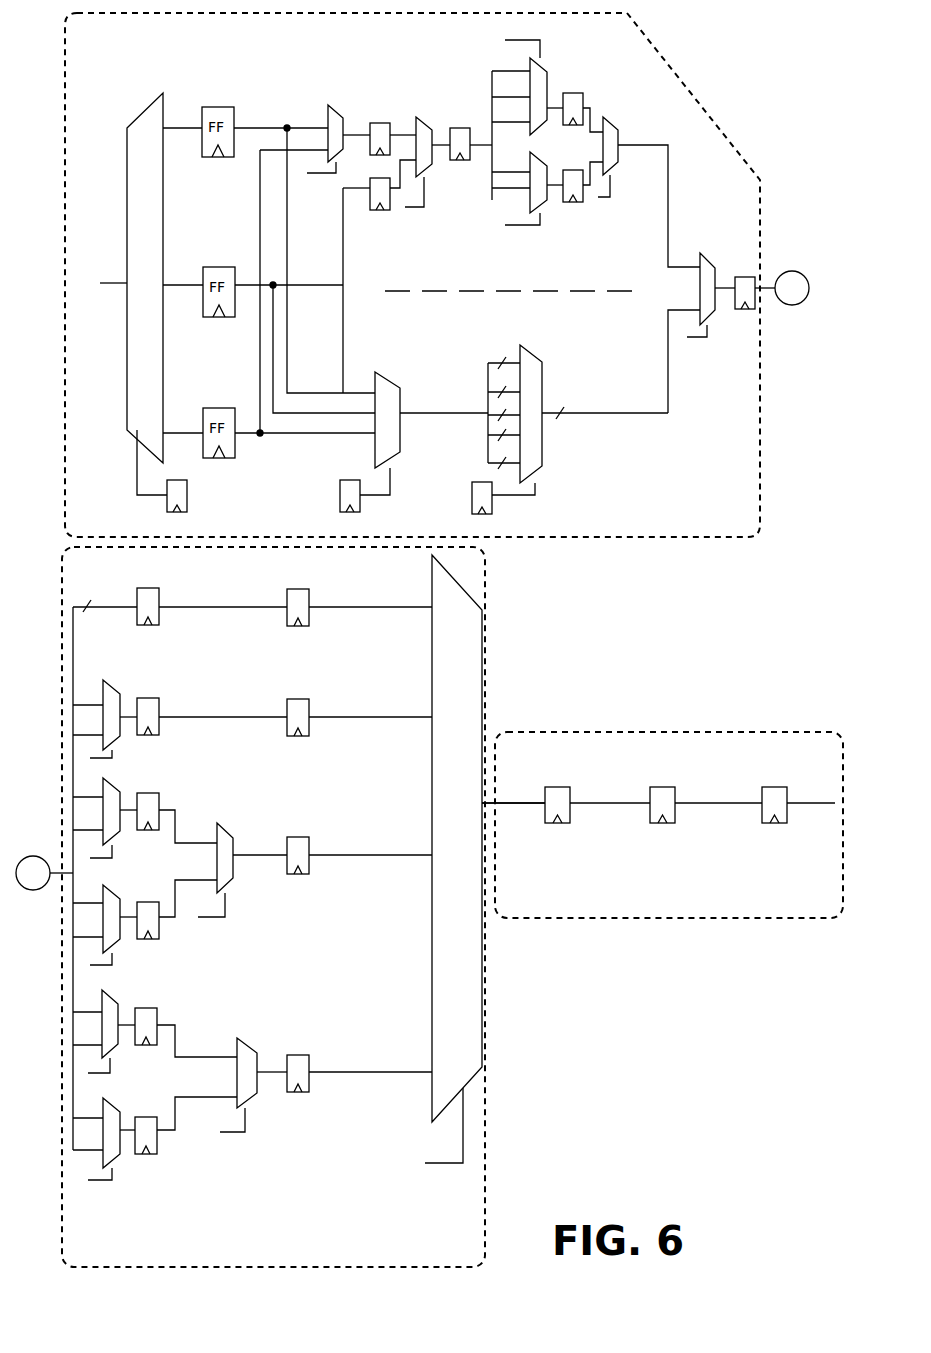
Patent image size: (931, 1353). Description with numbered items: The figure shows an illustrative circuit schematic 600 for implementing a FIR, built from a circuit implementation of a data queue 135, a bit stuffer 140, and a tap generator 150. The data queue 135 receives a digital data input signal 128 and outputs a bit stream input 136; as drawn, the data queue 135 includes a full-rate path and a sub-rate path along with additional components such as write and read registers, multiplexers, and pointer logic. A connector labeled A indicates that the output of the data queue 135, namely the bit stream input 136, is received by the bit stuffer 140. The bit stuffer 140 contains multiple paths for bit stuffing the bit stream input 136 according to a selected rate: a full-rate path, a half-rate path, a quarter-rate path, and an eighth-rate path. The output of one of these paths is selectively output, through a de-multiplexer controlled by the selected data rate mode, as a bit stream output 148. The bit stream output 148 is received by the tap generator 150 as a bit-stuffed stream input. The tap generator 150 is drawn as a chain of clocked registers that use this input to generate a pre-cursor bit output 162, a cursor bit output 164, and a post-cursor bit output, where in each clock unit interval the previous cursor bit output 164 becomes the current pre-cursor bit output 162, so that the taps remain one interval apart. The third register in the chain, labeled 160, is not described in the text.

The circuit schematic 600 is at (741, 58).
The data queue 135 is at (437, 275).
The digital data input signal 128 is at (116, 302).
The bit stream input 136 is at (52, 851).
The bit stuffer 140 is at (250, 907).
The bit stream output 148 is at (532, 769).
The tap generator 150 is at (662, 825).
The cursor bit output 164 is at (575, 862).
The pre-cursor bit output 162 is at (684, 862).
The cur_init_pos_d2 register 160 is at (794, 862).